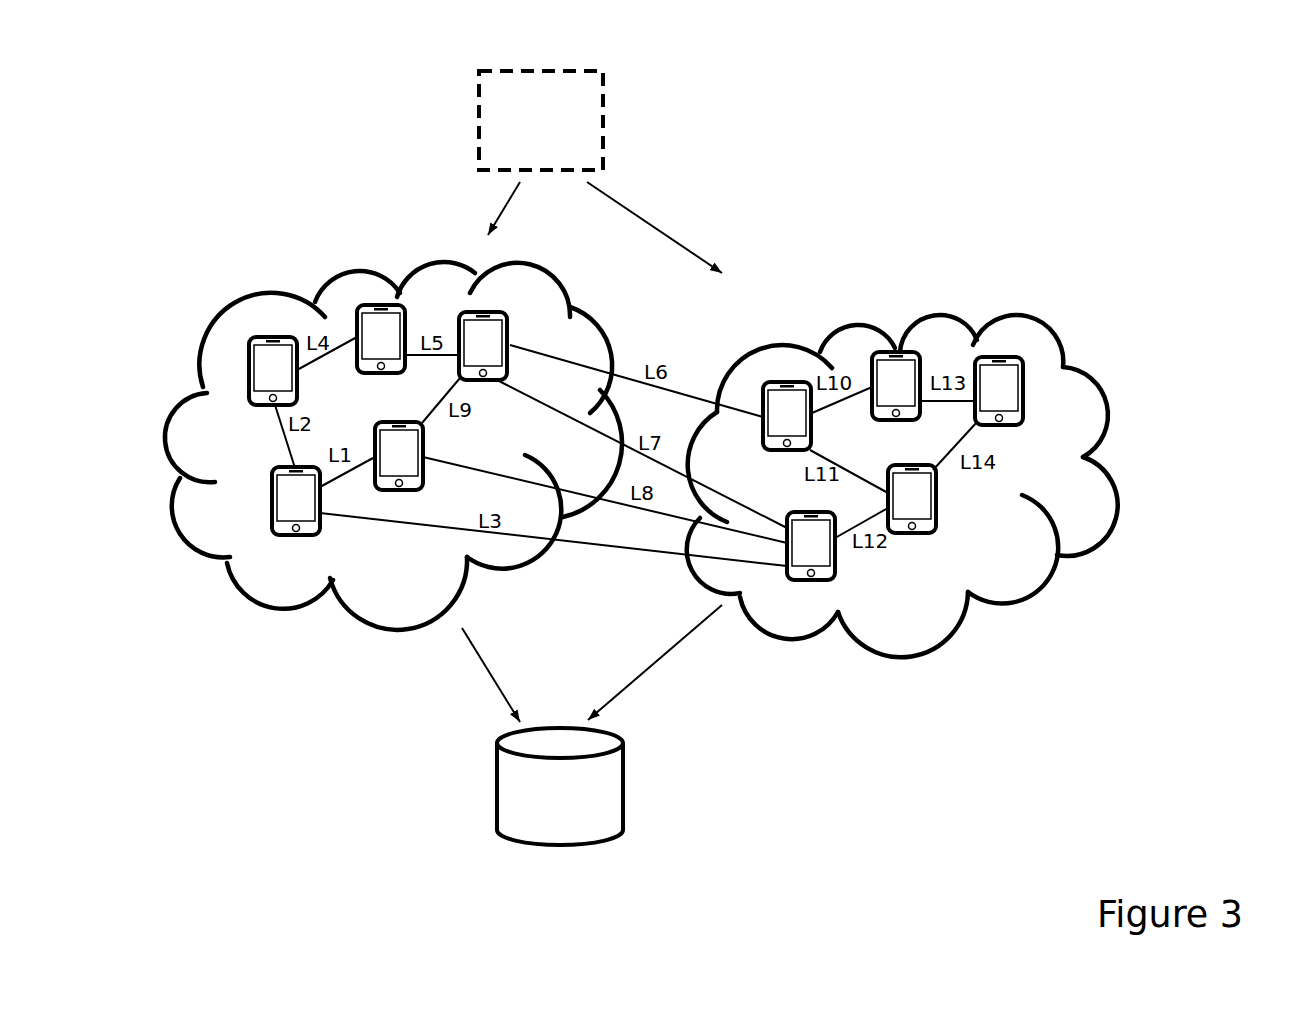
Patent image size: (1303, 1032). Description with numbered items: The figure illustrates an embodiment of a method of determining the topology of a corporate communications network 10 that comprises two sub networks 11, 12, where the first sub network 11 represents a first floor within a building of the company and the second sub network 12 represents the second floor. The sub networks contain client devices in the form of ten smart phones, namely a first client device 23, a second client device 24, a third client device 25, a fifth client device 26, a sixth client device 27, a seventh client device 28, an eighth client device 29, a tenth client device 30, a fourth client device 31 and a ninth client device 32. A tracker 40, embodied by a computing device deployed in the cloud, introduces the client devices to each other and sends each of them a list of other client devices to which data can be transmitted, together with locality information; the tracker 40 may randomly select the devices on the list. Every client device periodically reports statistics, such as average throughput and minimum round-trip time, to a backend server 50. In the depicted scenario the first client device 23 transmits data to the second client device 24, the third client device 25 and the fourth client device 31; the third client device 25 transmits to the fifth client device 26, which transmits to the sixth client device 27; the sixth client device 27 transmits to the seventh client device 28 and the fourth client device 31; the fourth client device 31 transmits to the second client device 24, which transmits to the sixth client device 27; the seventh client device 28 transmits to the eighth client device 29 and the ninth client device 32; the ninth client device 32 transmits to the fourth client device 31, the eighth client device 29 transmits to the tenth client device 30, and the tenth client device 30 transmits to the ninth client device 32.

The corporate communications network 10 is at (285, 113).
The first sub network 11 is at (318, 302).
The second sub network 12 is at (822, 352).
The first client device 23 is at (272, 473).
The second client device 24 is at (377, 440).
The third client device 25 is at (256, 337).
The fifth client device 26 is at (375, 305).
The sixth client device 27 is at (464, 312).
The seventh client device 28 is at (762, 382).
The eighth client device 29 is at (897, 352).
The tenth client device 30 is at (977, 357).
The fourth client device 31 is at (788, 512).
The ninth client device 32 is at (893, 468).
The tracker 40 is at (504, 72).
The backend server 50 is at (505, 803).